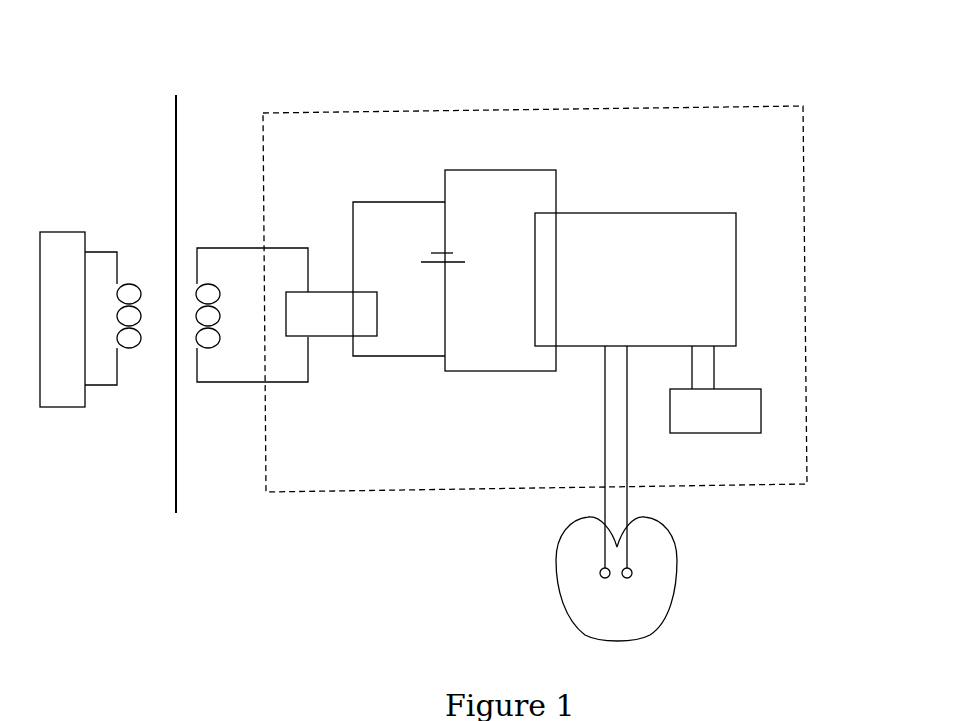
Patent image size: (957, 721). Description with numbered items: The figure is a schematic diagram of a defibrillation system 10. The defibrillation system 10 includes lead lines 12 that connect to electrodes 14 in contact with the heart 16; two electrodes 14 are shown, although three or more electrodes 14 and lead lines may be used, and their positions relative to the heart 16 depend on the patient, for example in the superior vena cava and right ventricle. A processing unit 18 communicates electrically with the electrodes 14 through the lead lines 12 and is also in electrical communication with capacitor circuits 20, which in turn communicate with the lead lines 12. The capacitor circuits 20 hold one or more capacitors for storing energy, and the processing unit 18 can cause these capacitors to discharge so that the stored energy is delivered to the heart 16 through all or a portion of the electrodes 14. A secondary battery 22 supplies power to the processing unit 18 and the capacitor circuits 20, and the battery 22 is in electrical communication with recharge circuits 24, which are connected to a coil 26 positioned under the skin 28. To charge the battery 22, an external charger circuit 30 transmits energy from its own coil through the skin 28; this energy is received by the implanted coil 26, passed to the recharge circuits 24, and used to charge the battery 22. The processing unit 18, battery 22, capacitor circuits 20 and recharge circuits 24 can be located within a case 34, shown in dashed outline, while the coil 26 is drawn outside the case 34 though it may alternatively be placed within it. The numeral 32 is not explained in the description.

The defibrillation system 10 is at (508, 76).
The lead lines 12 is at (603, 443).
The electrodes 14 is at (632, 578).
The heart 16 is at (560, 612).
The processing unit 18 is at (615, 212).
The capacitor circuits 20 is at (761, 428).
The secondary battery 22 is at (465, 262).
The recharge circuits 24 is at (331, 337).
The coil 26 is at (230, 335).
The skin 28 is at (176, 470).
The external charger circuit 30 is at (63, 407).
The external unit 32 is at (316, 718).
The case 34 is at (310, 492).